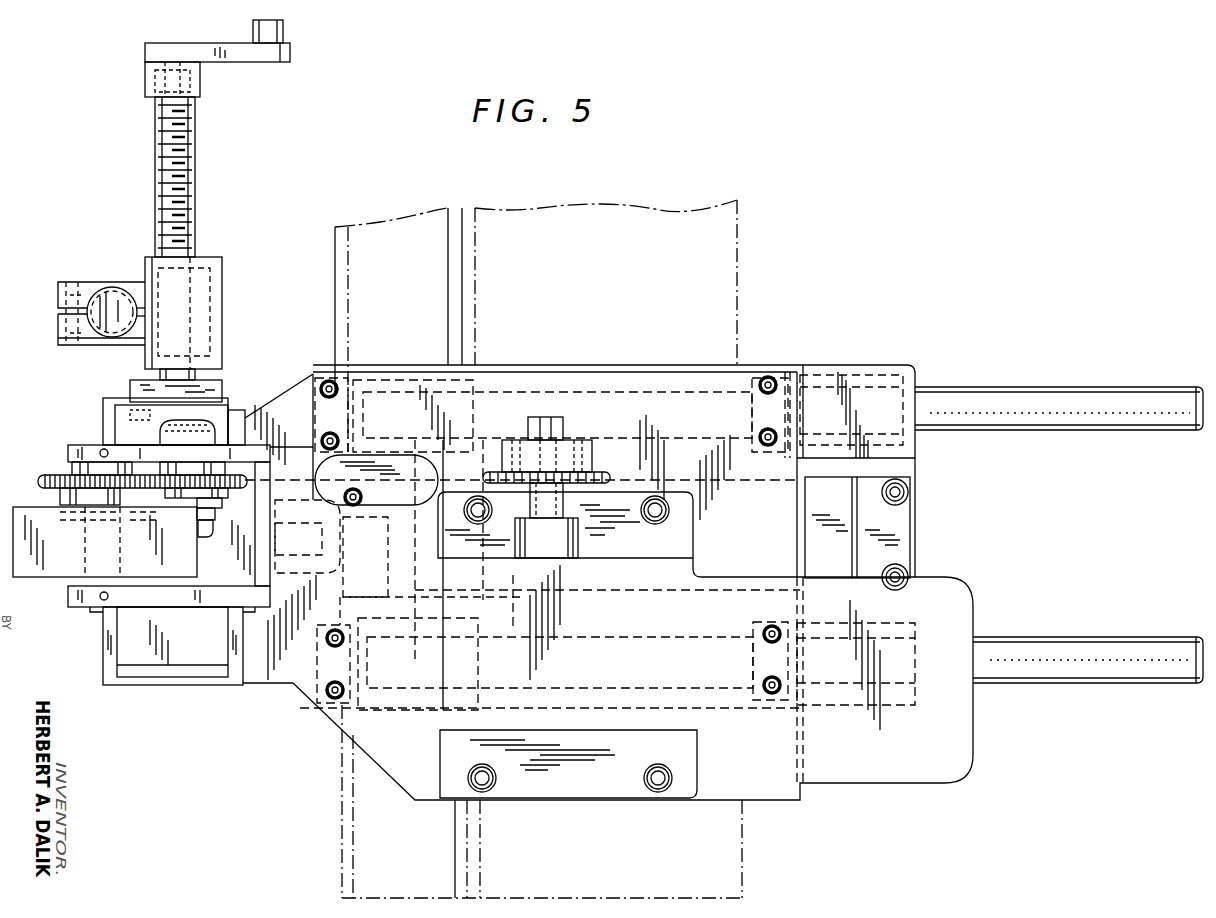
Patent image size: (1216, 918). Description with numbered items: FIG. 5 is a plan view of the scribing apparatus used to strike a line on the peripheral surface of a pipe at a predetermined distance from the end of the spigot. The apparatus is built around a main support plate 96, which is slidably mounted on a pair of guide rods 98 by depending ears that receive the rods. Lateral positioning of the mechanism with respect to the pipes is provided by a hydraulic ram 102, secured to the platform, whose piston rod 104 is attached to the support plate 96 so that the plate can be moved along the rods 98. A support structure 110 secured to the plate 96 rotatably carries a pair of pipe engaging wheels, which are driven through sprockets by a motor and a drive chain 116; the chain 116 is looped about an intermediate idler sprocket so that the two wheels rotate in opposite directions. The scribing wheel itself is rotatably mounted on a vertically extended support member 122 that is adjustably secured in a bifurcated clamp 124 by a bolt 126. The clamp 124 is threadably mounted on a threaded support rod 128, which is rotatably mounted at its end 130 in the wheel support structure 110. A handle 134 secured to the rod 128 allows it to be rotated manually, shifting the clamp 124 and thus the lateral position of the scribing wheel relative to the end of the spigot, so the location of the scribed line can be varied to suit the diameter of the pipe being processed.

The main support plate 96 is at (893, 372).
The guide rods 98 is at (1003, 372).
The hydraulic ram 102 is at (848, 515).
The piston rod 104 is at (362, 548).
The support structure 110 is at (245, 412).
The drive chain 116 is at (290, 481).
The support member 122 is at (113, 298).
The bifurcated clamp 124 is at (62, 292).
The bolt 126 is at (72, 346).
The threaded support rod 128 is at (196, 238).
The end of threaded support rod 130 is at (210, 376).
The handle 134 is at (236, 53).